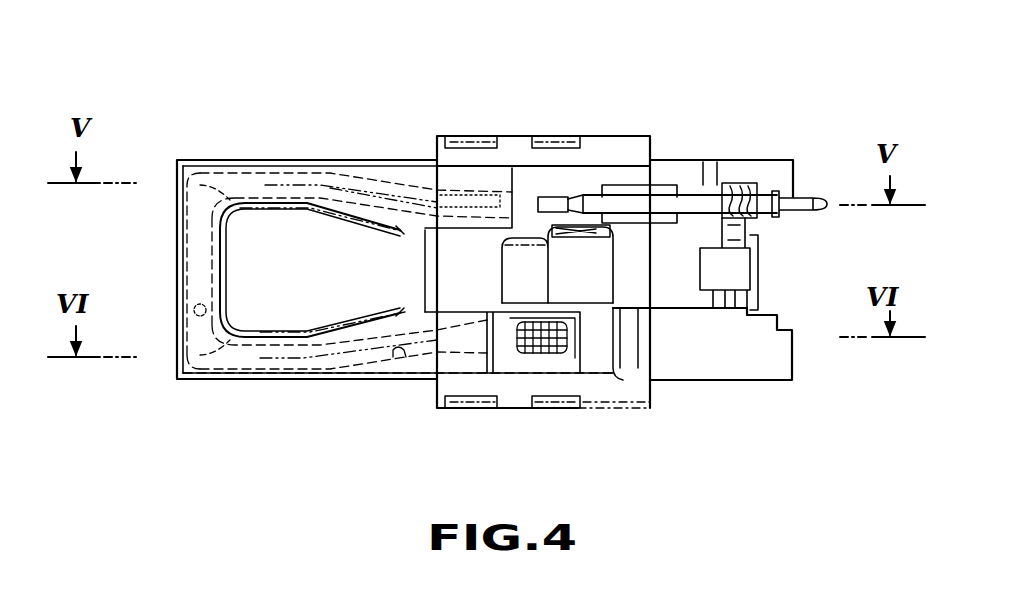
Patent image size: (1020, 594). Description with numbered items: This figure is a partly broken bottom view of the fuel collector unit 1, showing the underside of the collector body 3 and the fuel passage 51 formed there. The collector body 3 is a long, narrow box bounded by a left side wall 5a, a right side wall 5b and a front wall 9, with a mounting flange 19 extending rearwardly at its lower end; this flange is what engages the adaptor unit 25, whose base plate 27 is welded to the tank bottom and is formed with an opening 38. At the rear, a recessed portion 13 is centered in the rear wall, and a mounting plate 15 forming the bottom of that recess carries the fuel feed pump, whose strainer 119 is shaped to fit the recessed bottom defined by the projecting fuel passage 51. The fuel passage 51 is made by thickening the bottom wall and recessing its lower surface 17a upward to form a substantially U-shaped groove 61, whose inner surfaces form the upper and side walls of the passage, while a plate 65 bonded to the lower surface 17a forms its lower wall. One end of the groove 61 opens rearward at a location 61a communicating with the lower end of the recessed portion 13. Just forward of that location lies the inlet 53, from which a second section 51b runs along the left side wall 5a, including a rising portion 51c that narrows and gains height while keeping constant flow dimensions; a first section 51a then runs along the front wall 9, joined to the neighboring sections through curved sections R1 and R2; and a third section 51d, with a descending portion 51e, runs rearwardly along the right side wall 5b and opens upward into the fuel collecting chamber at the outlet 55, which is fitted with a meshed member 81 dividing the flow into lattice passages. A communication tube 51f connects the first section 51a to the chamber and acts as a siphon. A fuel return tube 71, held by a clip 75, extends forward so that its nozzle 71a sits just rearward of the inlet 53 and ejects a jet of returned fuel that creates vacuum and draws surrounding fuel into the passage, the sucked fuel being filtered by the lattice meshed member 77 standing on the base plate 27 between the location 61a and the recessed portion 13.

The fuel collector unit 1 is at (178, 160).
The collector body 3 is at (230, 158).
The left side wall 5a is at (288, 165).
The right side wall 5b is at (265, 381).
The front wall 9 is at (177, 220).
The recessed portion 13 is at (695, 262).
The mounting plate 15 is at (682, 290).
The lower surface 17a is at (307, 310).
The mounting flange 19 is at (608, 173).
The adaptor unit 25 is at (470, 136).
The base plate 27 is at (627, 410).
The opening 38 is at (540, 275).
The fuel passage 51 is at (462, 192).
The first section 51a is at (203, 290).
The second section 51b is at (498, 200).
The rising portion 51c is at (372, 185).
The third section 51d is at (458, 373).
The descending portion 51e is at (363, 340).
The communication tube 51f is at (196, 311).
The inlet 53 is at (530, 196).
The outlet 55 is at (533, 355).
The groove 61 is at (397, 358).
The location 61a is at (558, 200).
The plate 65 is at (178, 376).
The fuel return tube 71 is at (802, 197).
The nozzle 71a is at (582, 200).
The clip 75 is at (750, 182).
The meshed member 77 is at (612, 228).
The meshed member 81 is at (555, 355).
The strainer 119 is at (255, 255).
The curved section R1 is at (205, 195).
The curved section R2 is at (210, 382).